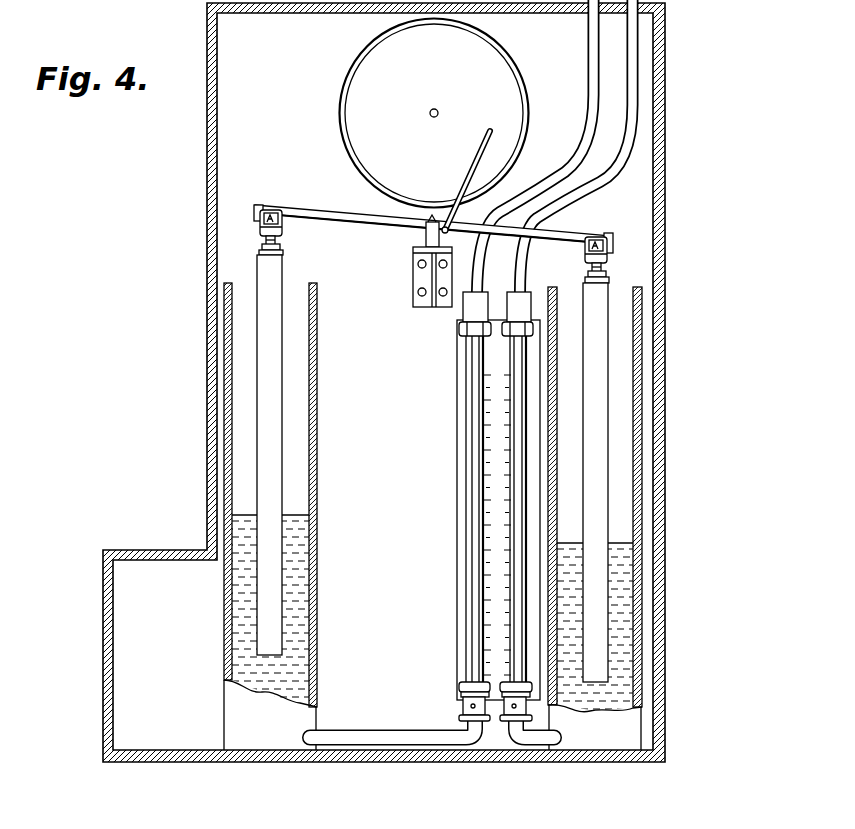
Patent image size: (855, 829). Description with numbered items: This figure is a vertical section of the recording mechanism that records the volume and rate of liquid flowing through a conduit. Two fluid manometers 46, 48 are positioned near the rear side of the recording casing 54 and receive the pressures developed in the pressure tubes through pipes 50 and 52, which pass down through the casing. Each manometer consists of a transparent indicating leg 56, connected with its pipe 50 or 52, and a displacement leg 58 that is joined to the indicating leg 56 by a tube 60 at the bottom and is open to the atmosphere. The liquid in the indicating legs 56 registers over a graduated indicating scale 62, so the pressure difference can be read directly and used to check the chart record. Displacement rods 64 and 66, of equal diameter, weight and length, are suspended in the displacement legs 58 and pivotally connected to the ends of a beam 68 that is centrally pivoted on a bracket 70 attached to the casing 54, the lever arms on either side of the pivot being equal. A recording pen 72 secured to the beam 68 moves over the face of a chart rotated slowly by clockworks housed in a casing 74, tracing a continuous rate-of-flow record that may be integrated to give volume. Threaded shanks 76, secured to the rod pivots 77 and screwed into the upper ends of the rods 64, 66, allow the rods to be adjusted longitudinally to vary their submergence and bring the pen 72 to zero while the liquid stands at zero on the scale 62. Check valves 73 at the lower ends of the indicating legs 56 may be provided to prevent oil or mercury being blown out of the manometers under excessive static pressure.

The fluid manometer 46 is at (467, 327).
The fluid manometer 48 is at (528, 310).
The pipe 50 is at (535, 146).
The pipe 52 is at (634, 70).
The recording casing 54 is at (667, 126).
The indicating leg 56 is at (472, 445).
The displacement leg 58 is at (302, 410).
The tube 60 is at (352, 728).
The indicating scale 62 is at (483, 378).
The displacement rod 64 is at (277, 302).
The displacement rod 66 is at (607, 298).
The beam 68 is at (345, 218).
The bracket 70 is at (417, 258).
The recording pen 72 is at (478, 155).
The check valve 73 is at (503, 711).
The casing 74 is at (515, 66).
The threaded shank 76 is at (280, 241).
The rod pivot 77 is at (260, 213).